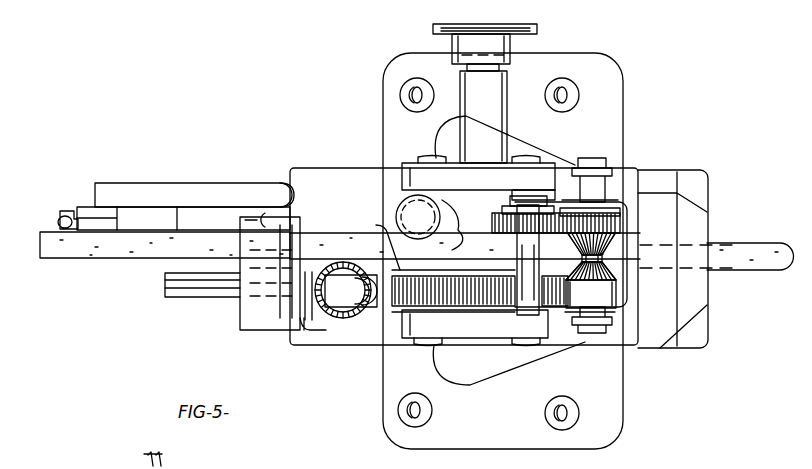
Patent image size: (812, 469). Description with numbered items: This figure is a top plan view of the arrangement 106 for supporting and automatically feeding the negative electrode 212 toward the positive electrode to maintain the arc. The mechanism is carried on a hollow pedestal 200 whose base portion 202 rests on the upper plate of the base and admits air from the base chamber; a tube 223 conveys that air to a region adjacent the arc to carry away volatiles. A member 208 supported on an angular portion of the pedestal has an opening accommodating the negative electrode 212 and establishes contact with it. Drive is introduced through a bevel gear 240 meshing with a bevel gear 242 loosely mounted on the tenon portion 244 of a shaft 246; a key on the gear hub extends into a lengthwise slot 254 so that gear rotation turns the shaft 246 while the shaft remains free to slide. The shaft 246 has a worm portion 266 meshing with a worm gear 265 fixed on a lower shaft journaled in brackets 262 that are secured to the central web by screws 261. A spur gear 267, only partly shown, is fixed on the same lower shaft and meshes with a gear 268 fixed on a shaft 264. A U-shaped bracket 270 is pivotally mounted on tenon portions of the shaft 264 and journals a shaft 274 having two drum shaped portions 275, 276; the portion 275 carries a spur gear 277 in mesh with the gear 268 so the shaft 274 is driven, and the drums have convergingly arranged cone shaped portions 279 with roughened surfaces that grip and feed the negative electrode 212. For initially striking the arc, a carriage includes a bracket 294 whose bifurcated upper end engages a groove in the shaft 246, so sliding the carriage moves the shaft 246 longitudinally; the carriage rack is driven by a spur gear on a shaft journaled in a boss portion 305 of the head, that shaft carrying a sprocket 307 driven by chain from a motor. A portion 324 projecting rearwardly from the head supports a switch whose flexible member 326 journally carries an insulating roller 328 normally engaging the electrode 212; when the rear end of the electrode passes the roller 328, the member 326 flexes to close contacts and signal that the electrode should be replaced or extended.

The arrangement for supporting and automatically feeding the negative electrode 106 is at (636, 93).
The pedestal 200 is at (470, 378).
The base portion 202 is at (460, 448).
The member 208 is at (700, 312).
The negative electrode 212 is at (125, 252).
The tube 223 is at (400, 205).
The bevel gear 240 is at (342, 325).
The bevel gear 242 is at (311, 335).
The tenon portion 244 is at (222, 292).
The shaft 246 is at (353, 270).
The slot 254 is at (178, 283).
The screws 261 is at (436, 156).
The brackets 262 is at (412, 177).
The shaft 264 is at (518, 250).
The worm gear 265 is at (503, 310).
The worm portion 266 is at (456, 310).
The spur gear 267 is at (498, 226).
The gear 268 is at (498, 213).
The U-shaped bracket 270 is at (620, 202).
The shaft 274 is at (598, 160).
The drum shaped portion 275 is at (605, 245).
The drum shaped portion 276 is at (598, 291).
The spur gear 277 is at (612, 222).
The cone shaped portions 279 is at (603, 262).
The bracket 294 is at (375, 228).
The boss portion 305 is at (497, 90).
The sprocket 307 is at (530, 30).
The projecting portion 324 is at (190, 190).
The flexible member 326 is at (86, 205).
The roller 328 is at (63, 211).